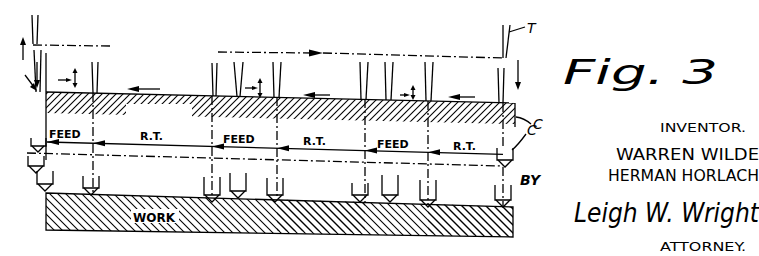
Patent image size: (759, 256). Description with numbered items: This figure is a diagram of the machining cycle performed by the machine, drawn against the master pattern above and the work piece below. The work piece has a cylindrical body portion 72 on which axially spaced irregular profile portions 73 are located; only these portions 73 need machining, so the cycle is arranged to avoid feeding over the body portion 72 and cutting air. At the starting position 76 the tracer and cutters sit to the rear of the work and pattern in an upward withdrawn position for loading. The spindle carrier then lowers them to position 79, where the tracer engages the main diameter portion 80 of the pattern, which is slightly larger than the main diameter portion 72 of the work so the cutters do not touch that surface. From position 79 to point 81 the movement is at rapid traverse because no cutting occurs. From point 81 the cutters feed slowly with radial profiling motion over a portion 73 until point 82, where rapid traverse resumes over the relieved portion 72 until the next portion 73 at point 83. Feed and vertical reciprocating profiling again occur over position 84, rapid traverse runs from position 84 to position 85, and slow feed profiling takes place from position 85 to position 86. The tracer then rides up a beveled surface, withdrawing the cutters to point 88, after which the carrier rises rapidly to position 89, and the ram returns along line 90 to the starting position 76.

The cylindrical body portion 72 is at (395, 219).
The irregular profile portions 73 is at (279, 215).
The starting position 76 is at (509, 47).
The lowered position 79 is at (504, 97).
The main diameter portion of the pattern 80 is at (280, 106).
The feed start point 81 is at (432, 72).
The feed end point 82 is at (360, 76).
The second feed start point 83 is at (281, 70).
The feed position 84 is at (210, 71).
The third feed start point 85 is at (98, 70).
The final feed end point 86 is at (48, 70).
The withdrawal point 88 is at (32, 65).
The raised position 89 is at (38, 24).
The rapid return line 90 is at (336, 53).